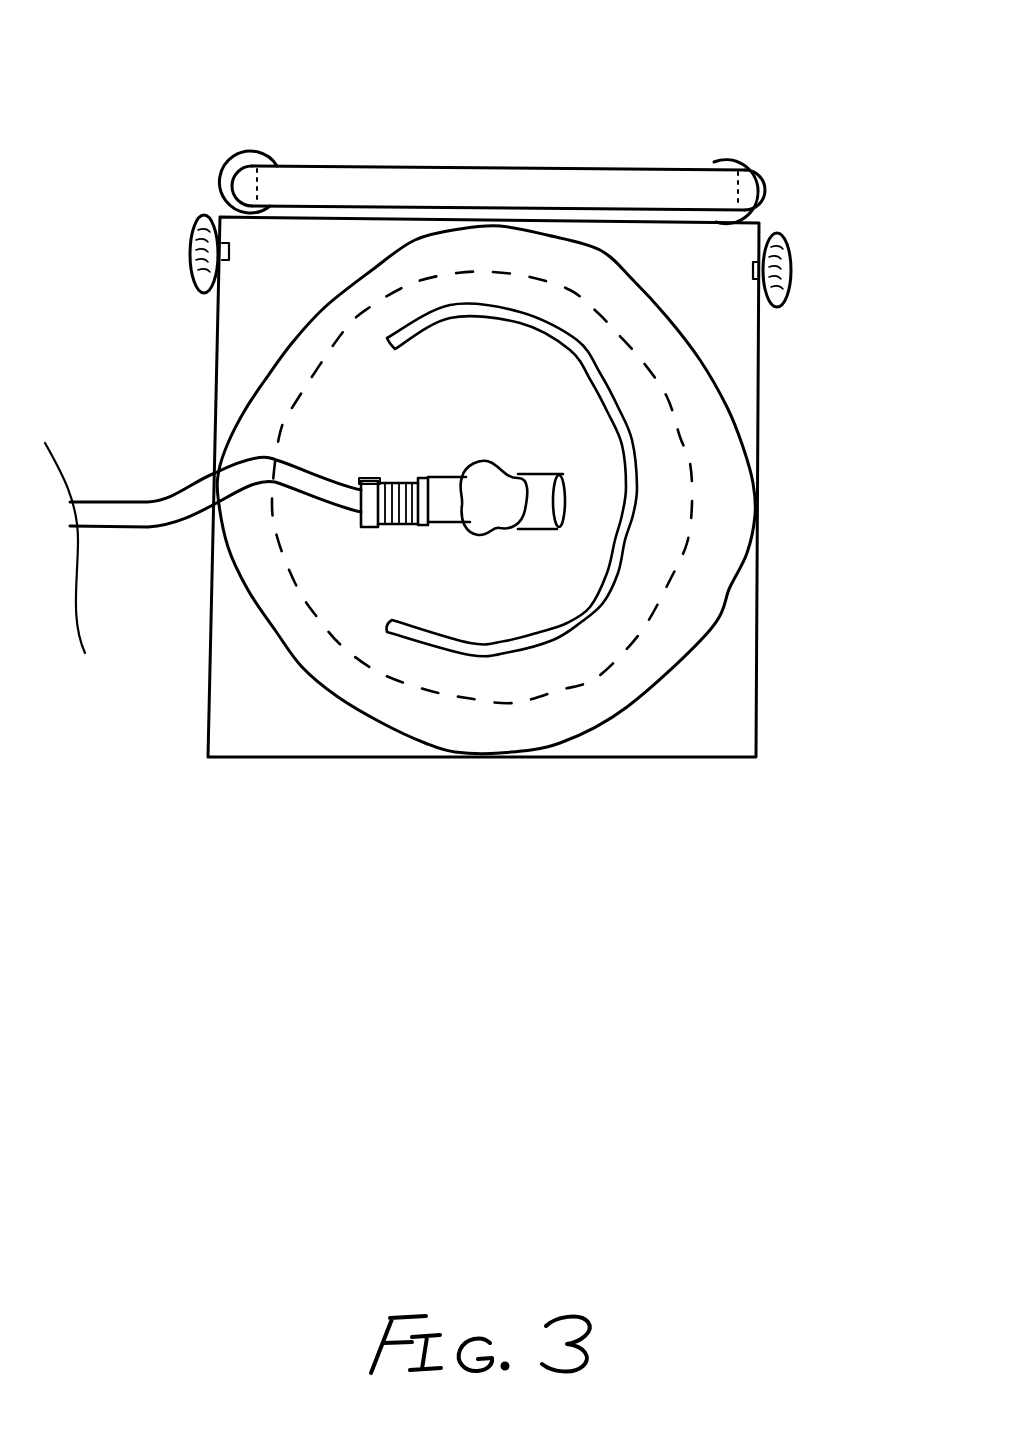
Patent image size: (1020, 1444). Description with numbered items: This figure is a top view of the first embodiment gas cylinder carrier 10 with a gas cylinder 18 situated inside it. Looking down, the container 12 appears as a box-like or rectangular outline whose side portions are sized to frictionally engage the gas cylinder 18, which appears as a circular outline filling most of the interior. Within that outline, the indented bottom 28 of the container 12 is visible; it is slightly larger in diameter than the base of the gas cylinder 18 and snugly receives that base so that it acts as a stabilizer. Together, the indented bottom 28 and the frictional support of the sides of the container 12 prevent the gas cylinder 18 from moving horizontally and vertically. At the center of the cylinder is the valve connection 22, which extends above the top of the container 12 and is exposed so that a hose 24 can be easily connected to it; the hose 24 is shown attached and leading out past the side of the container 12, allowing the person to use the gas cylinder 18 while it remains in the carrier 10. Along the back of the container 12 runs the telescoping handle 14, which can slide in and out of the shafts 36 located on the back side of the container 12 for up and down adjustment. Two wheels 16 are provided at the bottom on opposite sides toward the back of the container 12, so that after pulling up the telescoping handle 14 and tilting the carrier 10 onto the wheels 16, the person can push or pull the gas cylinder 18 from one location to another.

The gas cylinder carrier 10 is at (246, 791).
The container 12 is at (756, 757).
The telescoping handle 14 is at (587, 168).
The wheels 16 is at (791, 272).
The gas cylinder 18 is at (710, 630).
The valve connection 22 is at (402, 528).
The hose 24 is at (131, 502).
The indented bottom 28 is at (600, 683).
The shafts 36 is at (235, 152).